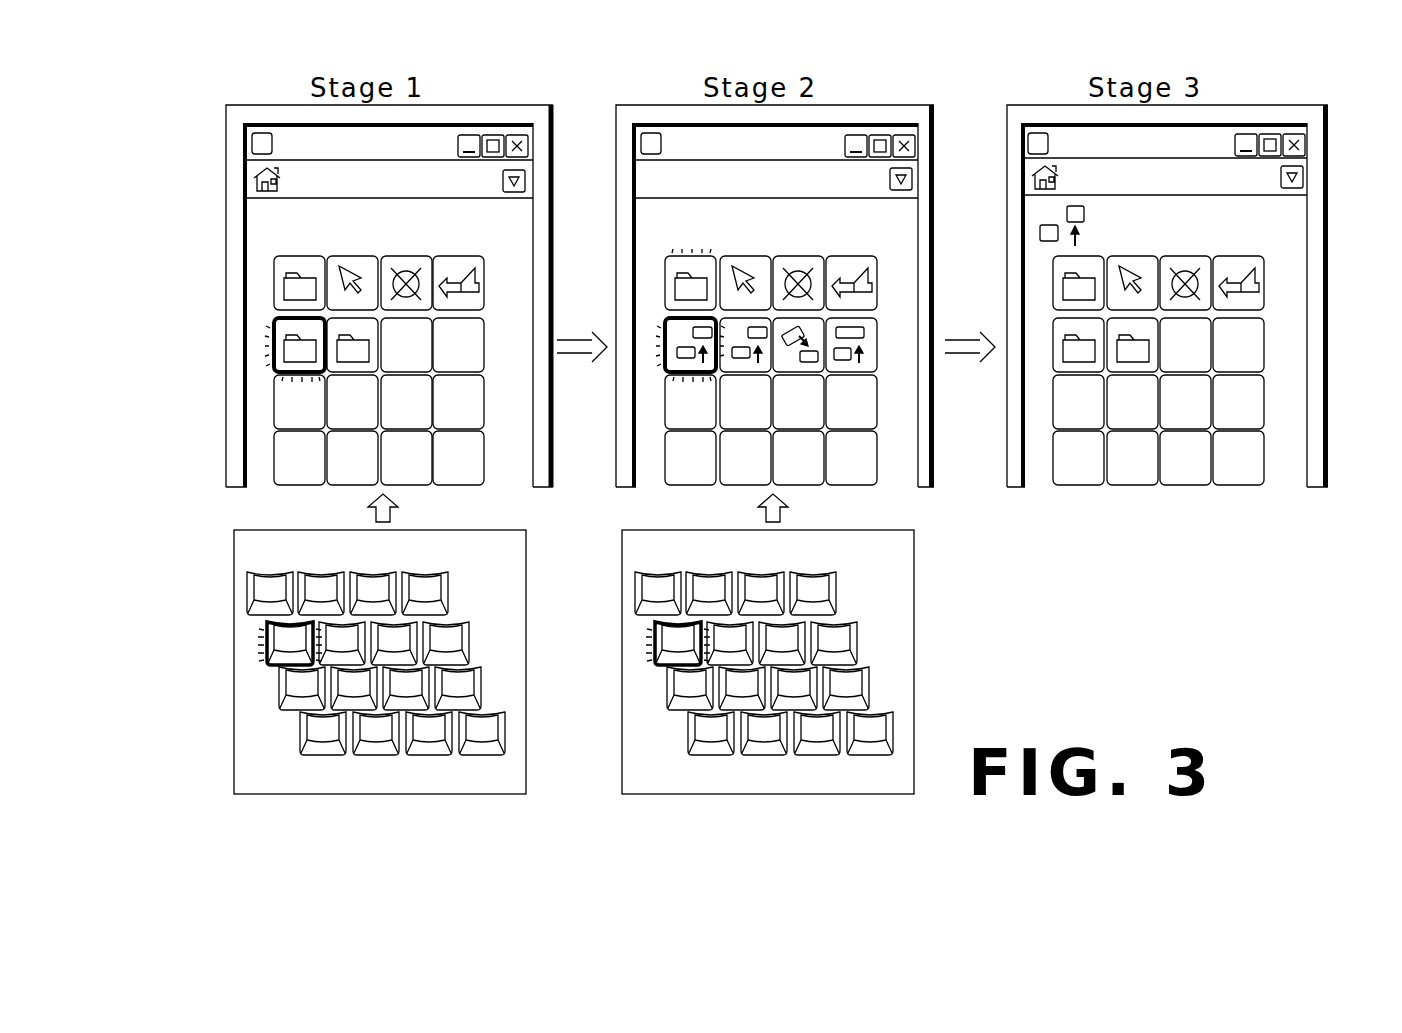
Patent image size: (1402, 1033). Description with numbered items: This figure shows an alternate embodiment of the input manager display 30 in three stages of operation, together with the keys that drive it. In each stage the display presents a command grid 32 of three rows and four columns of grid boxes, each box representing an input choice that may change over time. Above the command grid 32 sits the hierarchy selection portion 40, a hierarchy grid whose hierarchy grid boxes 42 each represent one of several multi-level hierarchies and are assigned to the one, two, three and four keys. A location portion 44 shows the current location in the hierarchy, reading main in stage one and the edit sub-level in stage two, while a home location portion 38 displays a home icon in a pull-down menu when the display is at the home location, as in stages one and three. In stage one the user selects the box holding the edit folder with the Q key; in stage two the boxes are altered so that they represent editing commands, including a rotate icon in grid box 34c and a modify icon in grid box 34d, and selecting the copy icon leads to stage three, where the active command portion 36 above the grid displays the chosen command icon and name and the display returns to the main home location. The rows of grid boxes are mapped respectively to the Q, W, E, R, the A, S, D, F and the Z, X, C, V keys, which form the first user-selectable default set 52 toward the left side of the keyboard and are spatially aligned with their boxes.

The input manager display 30 is at (405, 240).
The command grid 32 is at (314, 401).
The grid box 34c is at (797, 365).
The grid box 34d is at (850, 367).
The active command portion 36 is at (1258, 218).
The home location portion 38 is at (270, 190).
The hierarchy selection portion 40 is at (313, 261).
The hierarchy grid boxes 42 is at (457, 268).
The location portion 44 is at (434, 194).
The first user-selectable default set 52 is at (322, 795).